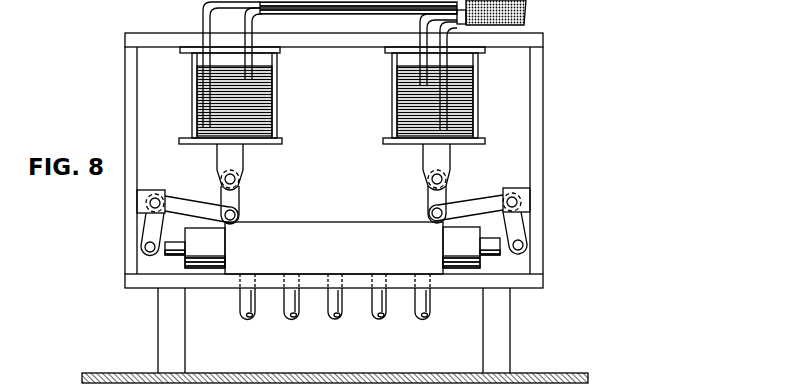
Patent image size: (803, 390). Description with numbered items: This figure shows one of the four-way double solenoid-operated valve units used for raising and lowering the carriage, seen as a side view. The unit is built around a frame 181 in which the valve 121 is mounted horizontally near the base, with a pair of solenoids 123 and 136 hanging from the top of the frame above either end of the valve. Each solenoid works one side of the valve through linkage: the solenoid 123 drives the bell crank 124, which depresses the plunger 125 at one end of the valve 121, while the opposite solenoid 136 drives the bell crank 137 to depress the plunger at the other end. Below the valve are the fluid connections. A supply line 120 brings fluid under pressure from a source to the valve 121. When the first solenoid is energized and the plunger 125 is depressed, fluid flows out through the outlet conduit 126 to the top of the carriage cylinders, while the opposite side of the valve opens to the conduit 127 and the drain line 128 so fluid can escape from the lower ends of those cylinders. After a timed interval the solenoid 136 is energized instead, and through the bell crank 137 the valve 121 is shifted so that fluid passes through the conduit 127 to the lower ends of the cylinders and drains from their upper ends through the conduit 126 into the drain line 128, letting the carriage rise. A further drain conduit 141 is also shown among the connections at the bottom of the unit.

The frame 181 is at (166, 12).
The solenoid 123 is at (214, 107).
The solenoid 136 is at (410, 108).
The bell crank 124 is at (182, 208).
The bell crank 137 is at (473, 206).
The valve 121 is at (353, 207).
The plunger 125 is at (176, 257).
The drain conduit 141 is at (243, 311).
The outlet conduit 126 is at (294, 320).
The supply line 120 is at (336, 321).
The conduit 127 is at (382, 321).
The drain line 128 is at (432, 320).